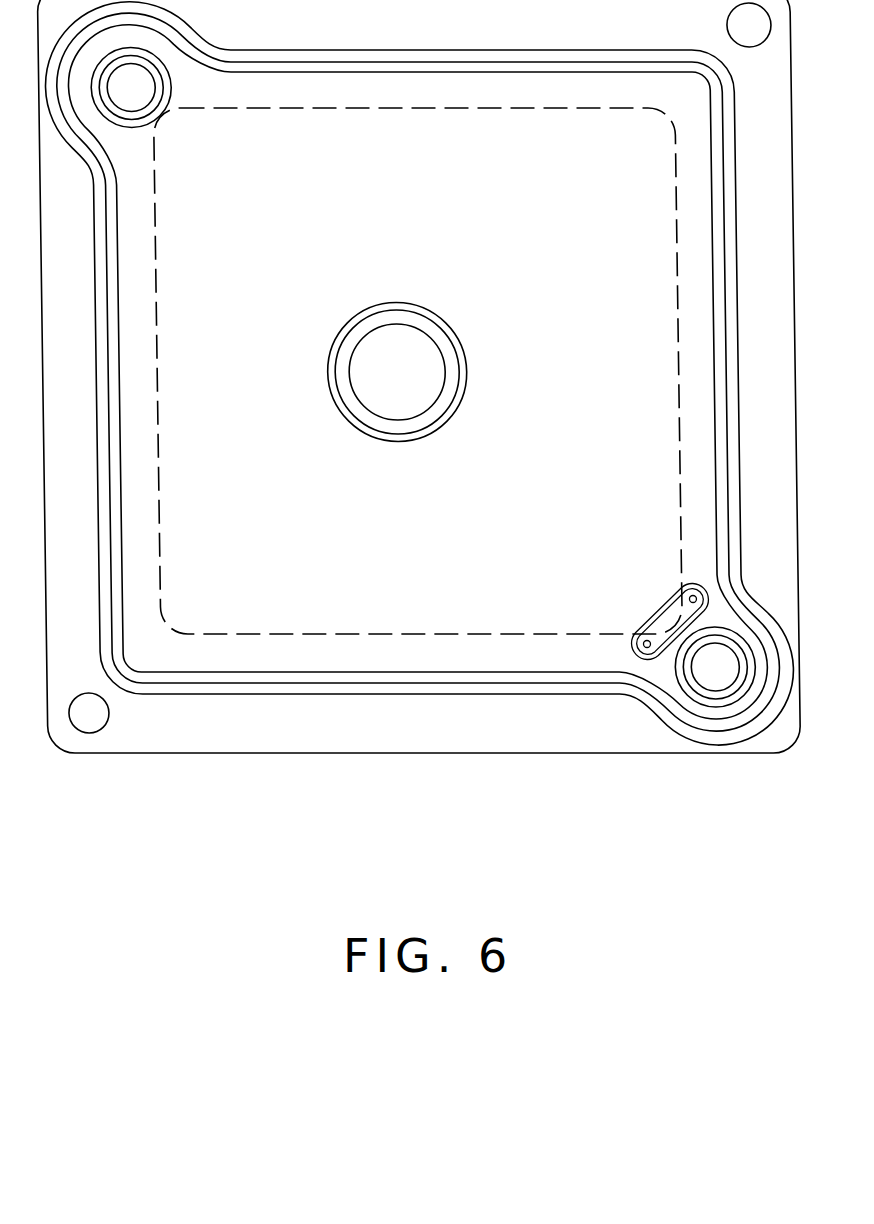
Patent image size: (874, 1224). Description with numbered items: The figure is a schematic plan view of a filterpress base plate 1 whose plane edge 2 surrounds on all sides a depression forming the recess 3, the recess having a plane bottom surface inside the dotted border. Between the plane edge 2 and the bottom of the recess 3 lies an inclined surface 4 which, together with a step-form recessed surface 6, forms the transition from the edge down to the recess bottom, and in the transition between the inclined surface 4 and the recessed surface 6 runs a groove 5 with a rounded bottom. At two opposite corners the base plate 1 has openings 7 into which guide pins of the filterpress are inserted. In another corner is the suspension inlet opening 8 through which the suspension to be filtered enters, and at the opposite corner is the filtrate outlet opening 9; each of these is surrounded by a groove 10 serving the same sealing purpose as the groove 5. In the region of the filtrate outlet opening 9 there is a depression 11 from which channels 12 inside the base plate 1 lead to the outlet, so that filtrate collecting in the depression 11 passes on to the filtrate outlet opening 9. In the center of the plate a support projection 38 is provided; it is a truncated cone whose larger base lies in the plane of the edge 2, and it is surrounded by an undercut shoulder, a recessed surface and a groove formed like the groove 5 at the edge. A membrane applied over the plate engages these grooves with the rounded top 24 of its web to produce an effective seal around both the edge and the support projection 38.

The base plate 1 is at (418, 418).
The plane edge 2 is at (187, 737).
The recess 3 is at (268, 612).
The inclined surface 4 is at (352, 658).
The groove 5 is at (405, 675).
The step-form recessed surface 6 is at (427, 687).
The openings 7 is at (728, 20).
The suspension inlet opening 8 is at (147, 80).
The filtrate outlet opening 9 is at (730, 672).
The groove 10 is at (142, 127).
The depression 11 is at (665, 618).
The channels 12 is at (693, 595).
The top of the web 24 is at (368, 433).
The support projection 38 is at (425, 375).